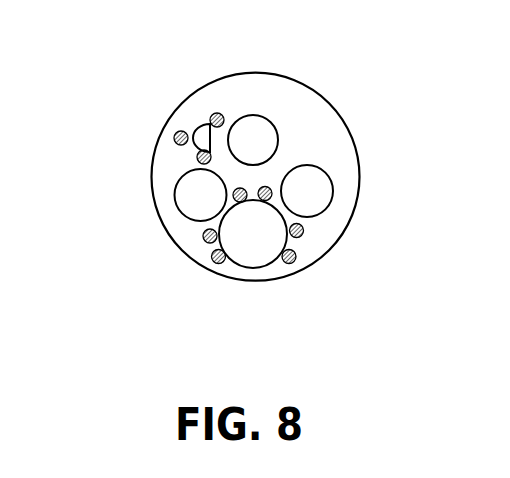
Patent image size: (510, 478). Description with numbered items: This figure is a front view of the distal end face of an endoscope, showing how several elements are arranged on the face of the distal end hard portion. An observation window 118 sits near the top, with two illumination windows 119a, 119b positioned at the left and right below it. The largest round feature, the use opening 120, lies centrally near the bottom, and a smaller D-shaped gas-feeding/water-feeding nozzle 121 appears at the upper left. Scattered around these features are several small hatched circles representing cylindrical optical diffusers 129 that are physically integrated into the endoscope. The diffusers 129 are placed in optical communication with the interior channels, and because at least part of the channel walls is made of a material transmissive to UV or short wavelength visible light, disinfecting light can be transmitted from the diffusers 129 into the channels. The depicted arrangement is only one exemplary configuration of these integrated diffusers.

The observation window 118 is at (253, 123).
The illumination window 119a is at (183, 203).
The illumination window 119b is at (322, 189).
The use opening 120 is at (265, 260).
The gas-feeding/water-feeding nozzle 121 is at (203, 124).
The cylindrical optical diffuser 129 is at (300, 235).